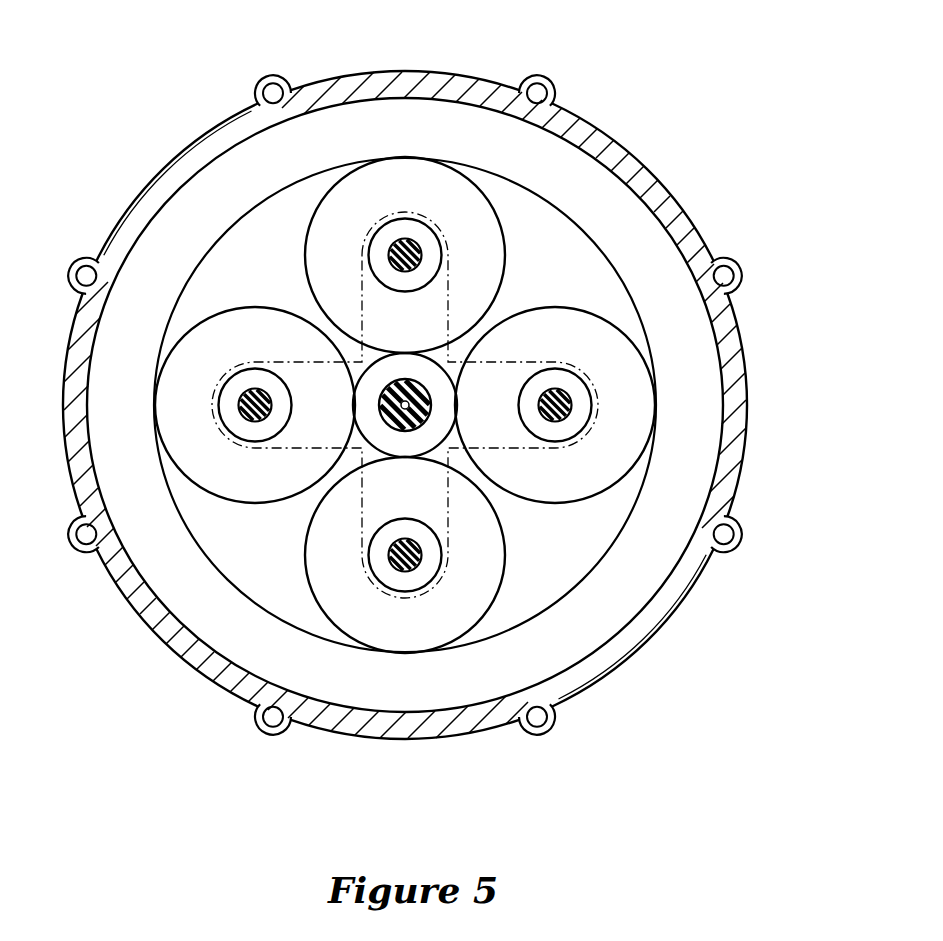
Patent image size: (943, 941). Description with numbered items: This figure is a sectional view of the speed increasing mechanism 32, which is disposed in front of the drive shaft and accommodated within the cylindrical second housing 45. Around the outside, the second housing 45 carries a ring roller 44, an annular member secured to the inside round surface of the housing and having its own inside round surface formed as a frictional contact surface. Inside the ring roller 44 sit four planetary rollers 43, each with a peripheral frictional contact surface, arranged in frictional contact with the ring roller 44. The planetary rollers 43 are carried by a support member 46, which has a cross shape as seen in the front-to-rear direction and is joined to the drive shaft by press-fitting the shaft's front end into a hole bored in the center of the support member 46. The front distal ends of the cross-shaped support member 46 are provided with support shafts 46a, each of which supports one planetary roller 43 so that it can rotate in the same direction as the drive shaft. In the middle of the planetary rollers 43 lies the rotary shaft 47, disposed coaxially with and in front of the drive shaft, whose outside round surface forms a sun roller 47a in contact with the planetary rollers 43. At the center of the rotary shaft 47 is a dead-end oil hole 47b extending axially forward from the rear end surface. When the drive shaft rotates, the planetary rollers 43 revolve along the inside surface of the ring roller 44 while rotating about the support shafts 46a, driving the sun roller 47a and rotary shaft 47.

The speed increasing mechanism 32 is at (712, 63).
The planetary rollers 43 is at (506, 243).
The ring roller 44 is at (649, 172).
The second housing 45 is at (143, 192).
The support member 46 is at (442, 263).
The support shafts 46a is at (405, 239).
The rotary shaft 47 is at (381, 424).
The sun roller 47a is at (368, 368).
The oil hole 47b is at (411, 411).